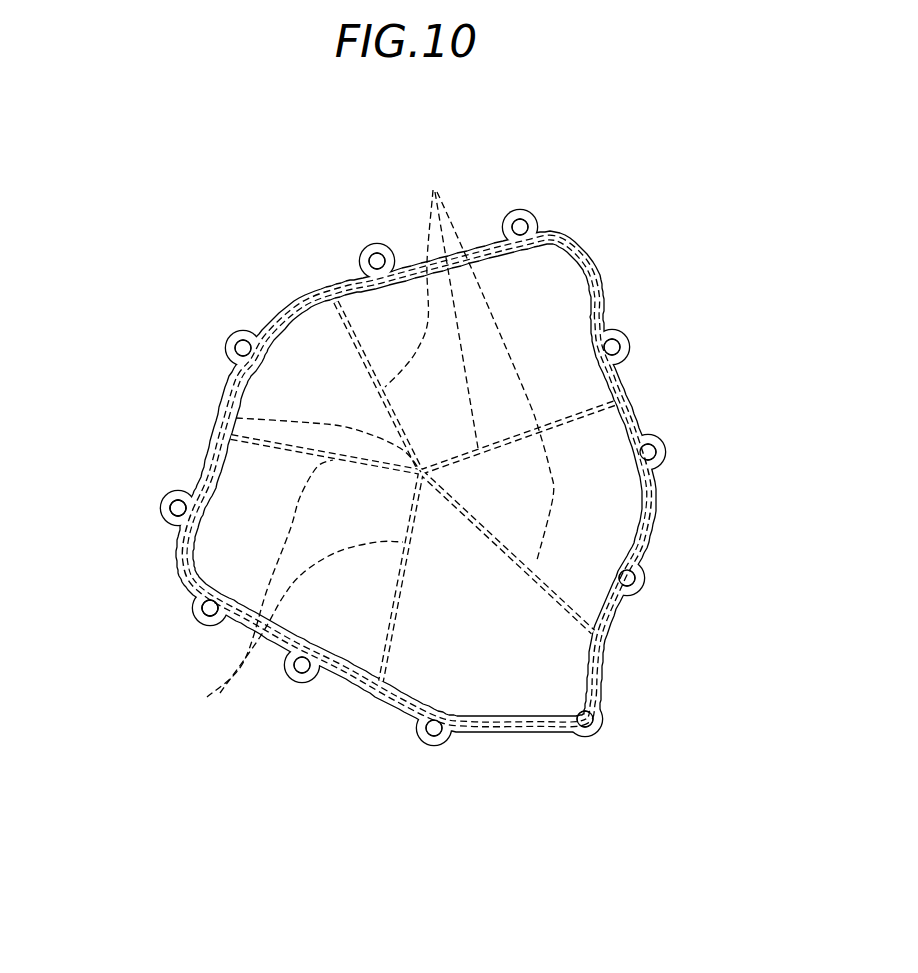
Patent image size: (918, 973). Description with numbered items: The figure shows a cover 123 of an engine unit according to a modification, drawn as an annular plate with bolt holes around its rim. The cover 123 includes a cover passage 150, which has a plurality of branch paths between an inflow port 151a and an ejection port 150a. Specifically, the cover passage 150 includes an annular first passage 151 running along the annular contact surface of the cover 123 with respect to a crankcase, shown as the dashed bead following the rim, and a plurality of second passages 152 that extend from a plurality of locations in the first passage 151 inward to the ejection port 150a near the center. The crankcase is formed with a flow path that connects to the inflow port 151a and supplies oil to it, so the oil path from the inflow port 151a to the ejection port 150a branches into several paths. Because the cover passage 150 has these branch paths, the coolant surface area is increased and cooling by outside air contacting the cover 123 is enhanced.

The cover 123 is at (638, 187).
The cover passage 150 is at (513, 732).
The ejection port 150a is at (218, 417).
The first passage 151 is at (376, 708).
The inflow port 151a is at (172, 565).
The second passages 152 is at (192, 699).